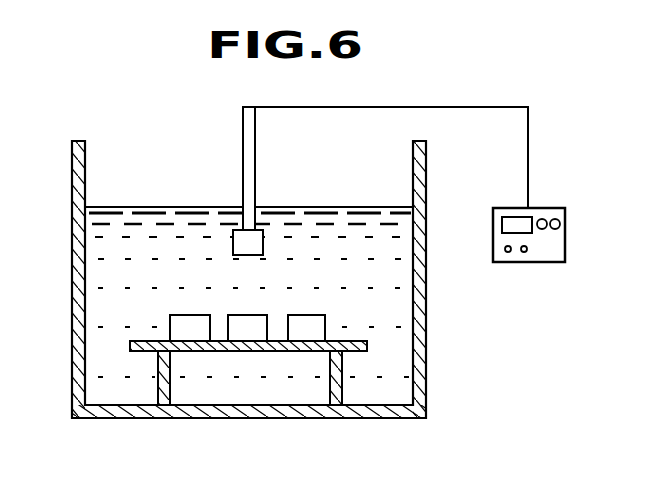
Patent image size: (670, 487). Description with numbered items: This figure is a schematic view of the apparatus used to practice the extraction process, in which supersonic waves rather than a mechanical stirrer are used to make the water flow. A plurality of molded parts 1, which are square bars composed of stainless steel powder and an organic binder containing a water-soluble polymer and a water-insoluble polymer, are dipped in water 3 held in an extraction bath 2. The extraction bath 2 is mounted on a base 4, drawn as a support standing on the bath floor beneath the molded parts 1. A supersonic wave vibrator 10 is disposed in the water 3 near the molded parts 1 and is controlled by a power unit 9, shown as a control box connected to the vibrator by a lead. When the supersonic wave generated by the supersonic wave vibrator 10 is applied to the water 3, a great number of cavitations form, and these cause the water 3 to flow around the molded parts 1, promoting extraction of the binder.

The molded parts 1 is at (188, 323).
The extraction bath 2 is at (79, 237).
The water 3 is at (90, 318).
The base 4 is at (352, 351).
The power unit 9 is at (561, 240).
The supersonic wave vibrator 10 is at (258, 246).